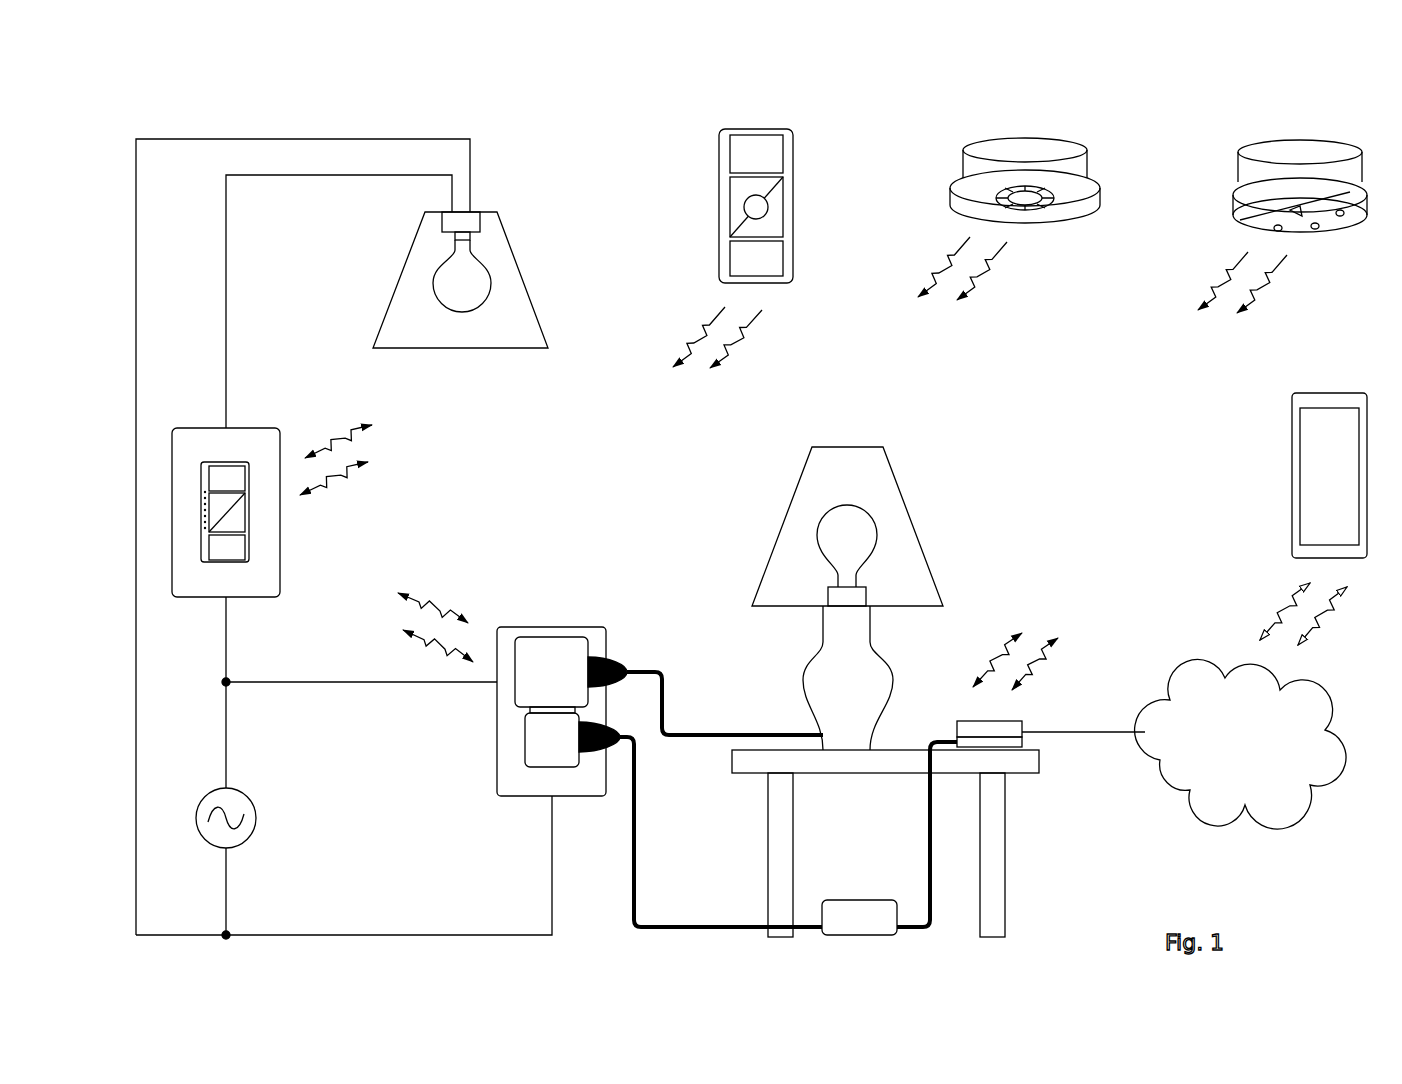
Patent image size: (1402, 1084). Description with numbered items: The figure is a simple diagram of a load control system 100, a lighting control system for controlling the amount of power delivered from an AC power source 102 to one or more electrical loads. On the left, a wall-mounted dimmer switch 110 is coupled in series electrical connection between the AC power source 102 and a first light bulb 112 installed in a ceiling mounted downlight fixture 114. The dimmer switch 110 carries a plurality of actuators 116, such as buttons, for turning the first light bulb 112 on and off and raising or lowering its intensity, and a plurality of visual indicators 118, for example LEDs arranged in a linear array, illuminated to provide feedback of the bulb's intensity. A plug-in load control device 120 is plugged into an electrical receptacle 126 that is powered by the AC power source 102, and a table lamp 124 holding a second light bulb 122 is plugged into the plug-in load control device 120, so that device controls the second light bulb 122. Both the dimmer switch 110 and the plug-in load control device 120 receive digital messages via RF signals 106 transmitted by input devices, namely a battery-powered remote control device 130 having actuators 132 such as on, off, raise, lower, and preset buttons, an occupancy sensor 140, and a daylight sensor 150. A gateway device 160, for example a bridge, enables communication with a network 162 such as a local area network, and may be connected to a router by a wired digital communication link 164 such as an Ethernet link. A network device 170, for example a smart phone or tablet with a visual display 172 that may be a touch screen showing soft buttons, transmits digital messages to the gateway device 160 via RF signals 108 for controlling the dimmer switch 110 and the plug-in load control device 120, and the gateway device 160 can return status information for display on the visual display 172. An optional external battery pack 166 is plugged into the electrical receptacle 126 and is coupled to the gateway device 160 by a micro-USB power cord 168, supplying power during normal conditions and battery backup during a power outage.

The load control system 100 is at (293, 83).
The AC power source 102 is at (243, 807).
The RF signals 106 is at (433, 580).
The RF signals 108 is at (1272, 600).
The dimmer switch 110 is at (252, 438).
The first light bulb 112 is at (462, 270).
The ceiling mounted downlight fixture 114 is at (410, 250).
The actuators 116 is at (225, 483).
The visual indicators 118 is at (192, 513).
The plug-in load control device 120 is at (570, 647).
The second light bulb 122 is at (842, 537).
The table lamp 124 is at (830, 694).
The electrical receptacle 126 is at (512, 778).
The remote control device 130 is at (698, 212).
The actuators 132 is at (767, 148).
The occupancy sensor 140 is at (1037, 147).
The daylight sensor 150 is at (1353, 212).
The gateway device 160 is at (1037, 713).
The network 162 is at (1225, 785).
The wired digital communication link 164 is at (1093, 733).
The external battery pack 166 is at (868, 918).
The micro-USB power cord 168 is at (930, 808).
The network device 170 is at (1330, 392).
The visual display 172 is at (1330, 482).